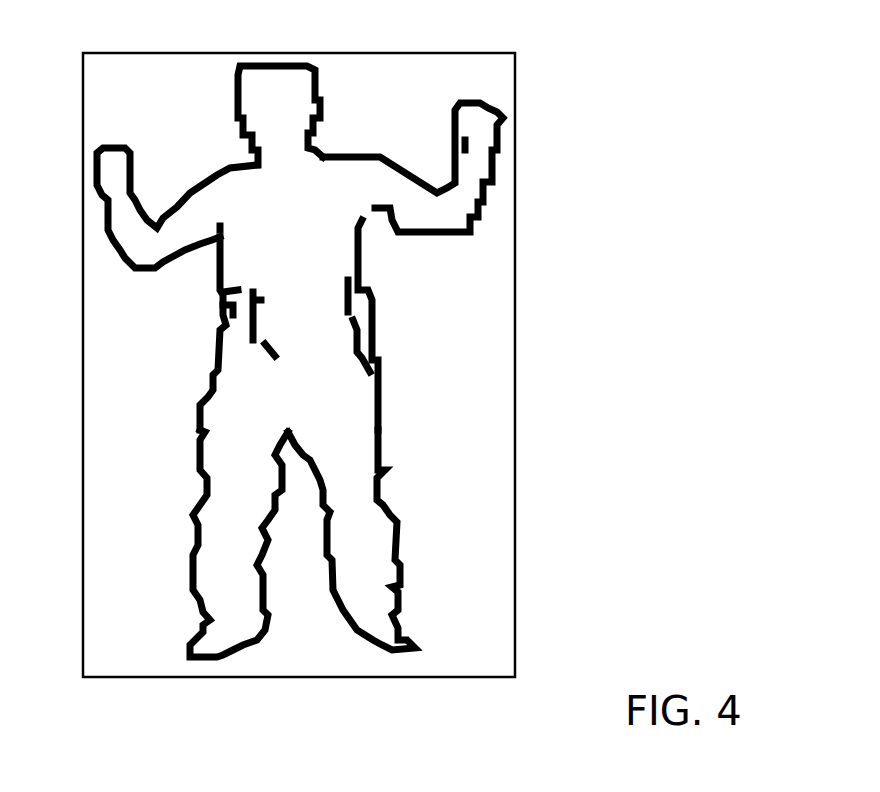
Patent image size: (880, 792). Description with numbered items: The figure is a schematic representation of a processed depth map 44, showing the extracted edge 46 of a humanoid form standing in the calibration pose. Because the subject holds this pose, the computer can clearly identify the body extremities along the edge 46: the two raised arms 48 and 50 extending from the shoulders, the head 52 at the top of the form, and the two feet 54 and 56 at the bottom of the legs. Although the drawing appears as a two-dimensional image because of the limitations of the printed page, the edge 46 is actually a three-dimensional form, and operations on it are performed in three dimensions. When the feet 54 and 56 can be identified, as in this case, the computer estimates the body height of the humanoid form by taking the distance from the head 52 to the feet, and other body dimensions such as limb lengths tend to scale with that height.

The processed depth map 44 is at (515, 65).
The extracted edge 46 is at (375, 323).
The arm 48 is at (495, 152).
The arm 50 is at (108, 207).
The head 52 is at (294, 62).
The foot 54 is at (400, 653).
The foot 56 is at (203, 660).